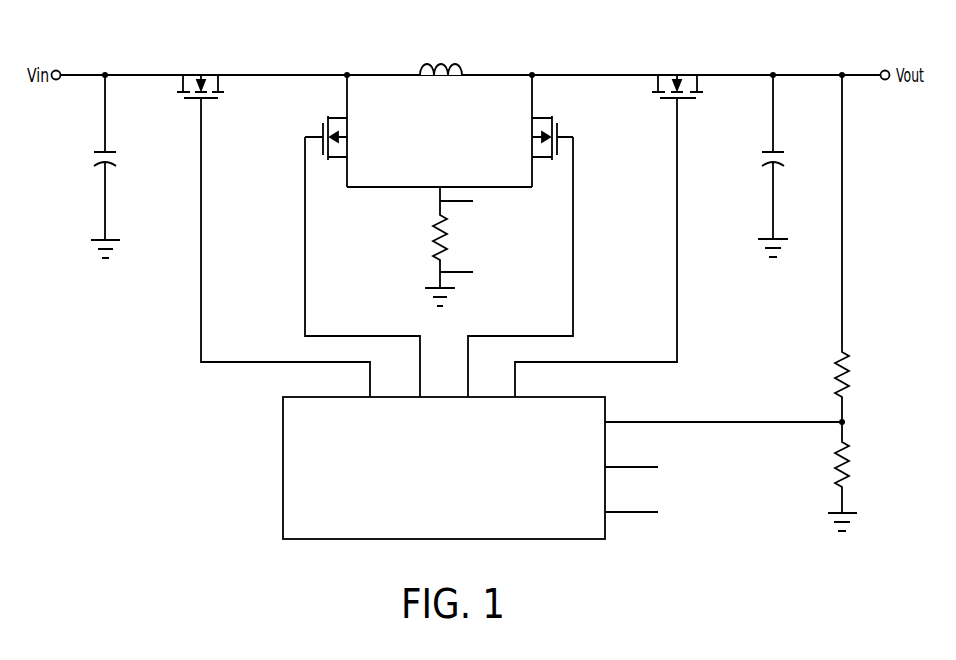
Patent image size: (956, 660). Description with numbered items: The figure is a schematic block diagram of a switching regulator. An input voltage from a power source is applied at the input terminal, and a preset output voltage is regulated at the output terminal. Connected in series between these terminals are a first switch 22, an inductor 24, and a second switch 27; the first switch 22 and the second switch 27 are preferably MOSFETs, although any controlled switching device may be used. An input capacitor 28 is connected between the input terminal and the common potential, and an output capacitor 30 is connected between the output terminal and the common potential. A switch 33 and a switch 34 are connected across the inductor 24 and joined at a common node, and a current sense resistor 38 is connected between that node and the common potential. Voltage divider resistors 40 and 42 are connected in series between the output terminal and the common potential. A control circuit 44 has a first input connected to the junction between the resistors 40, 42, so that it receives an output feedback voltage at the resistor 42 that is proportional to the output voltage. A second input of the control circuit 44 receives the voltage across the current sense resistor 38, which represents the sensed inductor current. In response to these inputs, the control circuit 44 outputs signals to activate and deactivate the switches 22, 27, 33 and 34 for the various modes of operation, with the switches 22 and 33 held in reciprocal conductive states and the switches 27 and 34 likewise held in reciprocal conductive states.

The first switch 22 is at (191, 77).
The inductor 24 is at (457, 62).
The second switch 27 is at (684, 75).
The input capacitor 28 is at (94, 160).
The output capacitor 30 is at (781, 146).
The switch 33 is at (343, 128).
The switch 34 is at (562, 129).
The current sense resistor 38 is at (437, 243).
The voltage divider resistor 40 is at (854, 378).
The voltage divider resistor 42 is at (854, 466).
The control circuit 44 is at (586, 541).